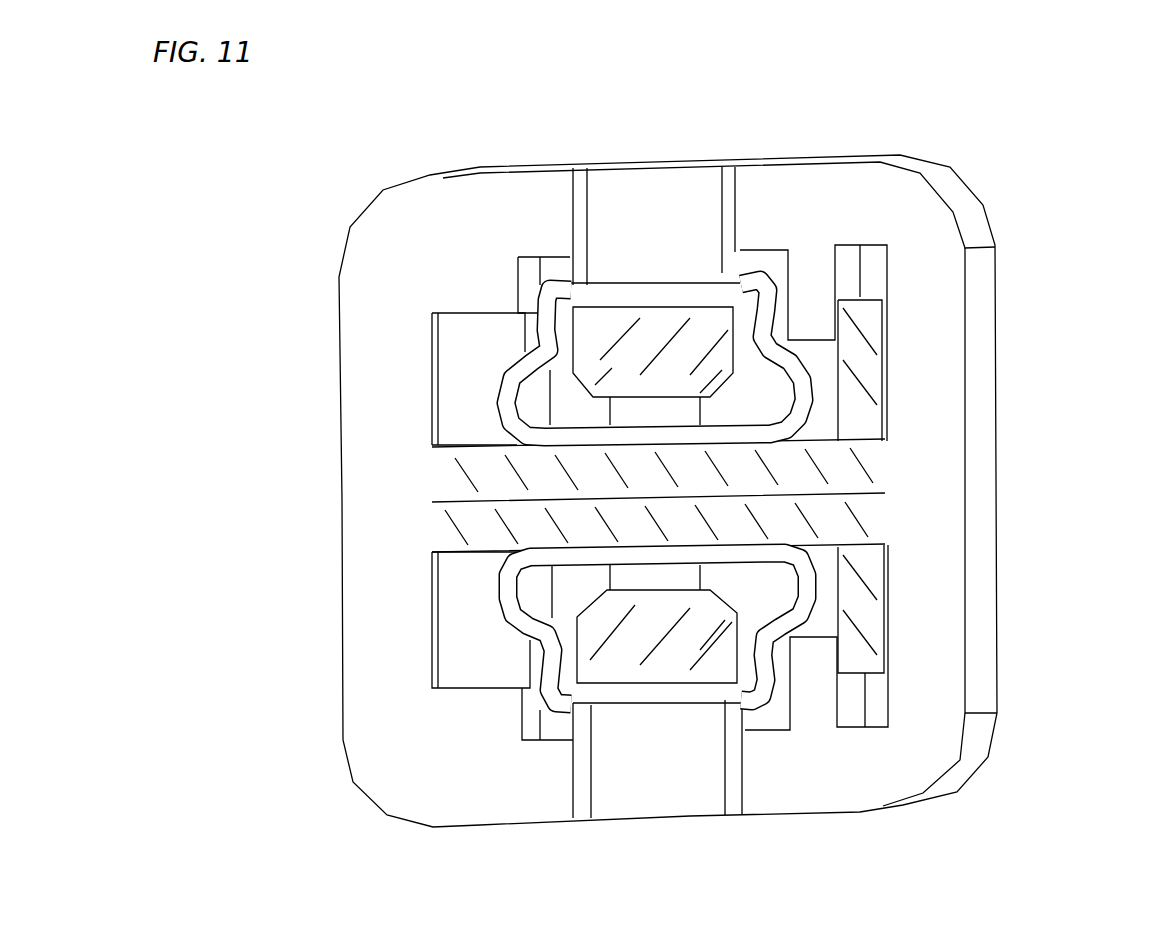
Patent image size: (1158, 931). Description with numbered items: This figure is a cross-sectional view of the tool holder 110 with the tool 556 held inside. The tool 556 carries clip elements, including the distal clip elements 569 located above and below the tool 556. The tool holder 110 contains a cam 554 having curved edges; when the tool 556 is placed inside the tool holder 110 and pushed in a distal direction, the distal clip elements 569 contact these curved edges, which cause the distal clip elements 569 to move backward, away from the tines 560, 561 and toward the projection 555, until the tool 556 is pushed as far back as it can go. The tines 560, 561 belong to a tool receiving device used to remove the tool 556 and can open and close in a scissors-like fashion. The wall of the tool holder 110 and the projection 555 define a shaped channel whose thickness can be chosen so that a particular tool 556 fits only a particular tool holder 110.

The tool holder 110 is at (997, 382).
The cam 554 is at (666, 213).
The projection 555 is at (818, 280).
The tool 556 is at (878, 540).
The tine 560 is at (697, 383).
The tine 561 is at (698, 645).
The distal clip element 569 is at (549, 314).